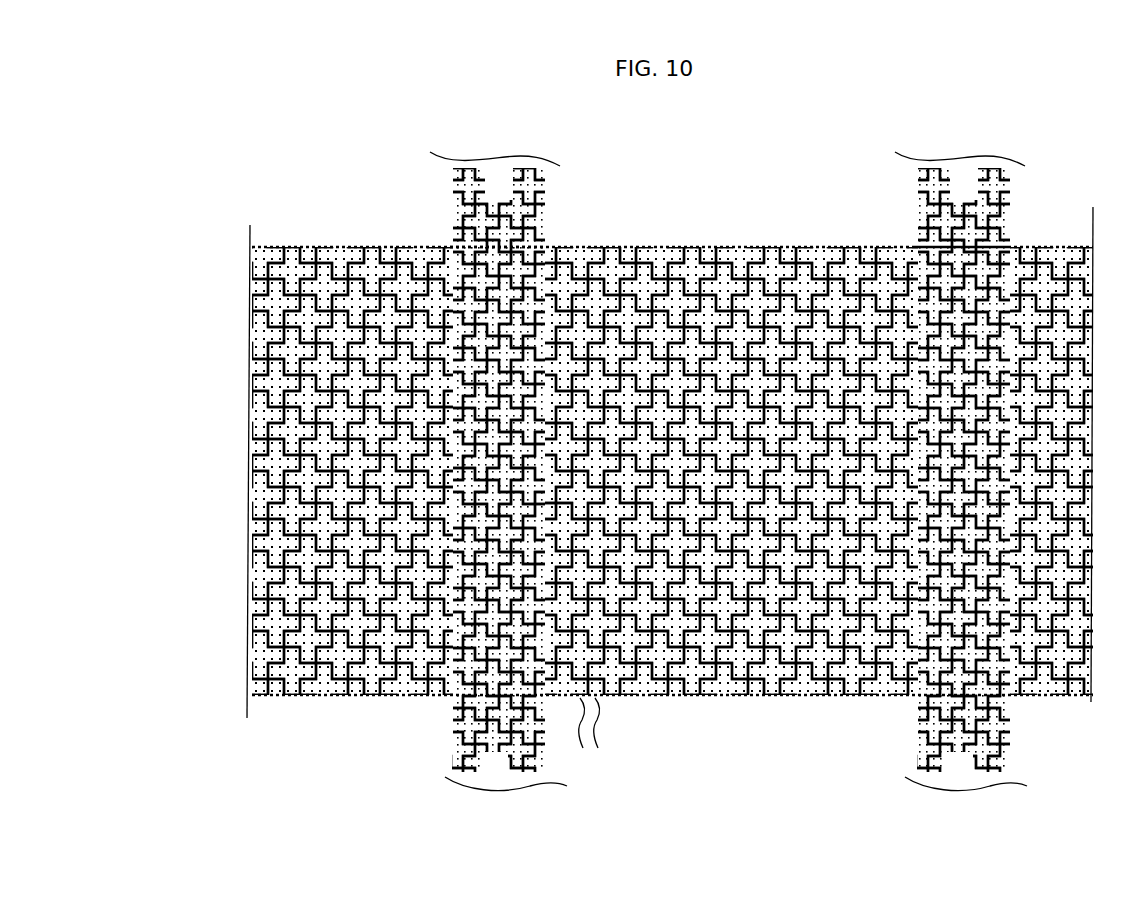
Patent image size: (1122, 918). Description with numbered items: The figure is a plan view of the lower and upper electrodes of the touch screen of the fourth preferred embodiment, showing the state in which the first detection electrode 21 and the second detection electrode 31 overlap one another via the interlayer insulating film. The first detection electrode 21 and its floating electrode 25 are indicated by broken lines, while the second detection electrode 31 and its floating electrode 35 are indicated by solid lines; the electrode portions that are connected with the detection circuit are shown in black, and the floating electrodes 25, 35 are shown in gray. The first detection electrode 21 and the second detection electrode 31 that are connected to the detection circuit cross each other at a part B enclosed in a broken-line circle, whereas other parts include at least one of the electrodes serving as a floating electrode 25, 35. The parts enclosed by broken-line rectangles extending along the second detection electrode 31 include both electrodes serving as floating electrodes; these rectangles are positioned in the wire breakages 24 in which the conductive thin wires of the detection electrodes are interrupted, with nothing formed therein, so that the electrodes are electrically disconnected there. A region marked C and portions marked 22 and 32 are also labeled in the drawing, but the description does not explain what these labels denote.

The first detection electrode 21 is at (250, 232).
The end portion 22 is at (346, 252).
The wire breakage 24 is at (604, 249).
The floating electrode 25 is at (540, 733).
The second detection electrode 31 is at (550, 152).
The strip portion 32 is at (547, 247).
The floating electrode 35 is at (589, 723).
The crossing part B is at (960, 500).
The region C is at (383, 505).